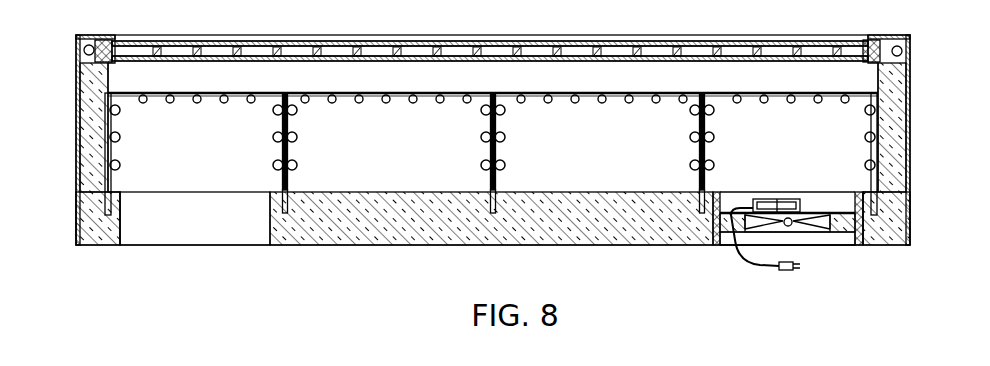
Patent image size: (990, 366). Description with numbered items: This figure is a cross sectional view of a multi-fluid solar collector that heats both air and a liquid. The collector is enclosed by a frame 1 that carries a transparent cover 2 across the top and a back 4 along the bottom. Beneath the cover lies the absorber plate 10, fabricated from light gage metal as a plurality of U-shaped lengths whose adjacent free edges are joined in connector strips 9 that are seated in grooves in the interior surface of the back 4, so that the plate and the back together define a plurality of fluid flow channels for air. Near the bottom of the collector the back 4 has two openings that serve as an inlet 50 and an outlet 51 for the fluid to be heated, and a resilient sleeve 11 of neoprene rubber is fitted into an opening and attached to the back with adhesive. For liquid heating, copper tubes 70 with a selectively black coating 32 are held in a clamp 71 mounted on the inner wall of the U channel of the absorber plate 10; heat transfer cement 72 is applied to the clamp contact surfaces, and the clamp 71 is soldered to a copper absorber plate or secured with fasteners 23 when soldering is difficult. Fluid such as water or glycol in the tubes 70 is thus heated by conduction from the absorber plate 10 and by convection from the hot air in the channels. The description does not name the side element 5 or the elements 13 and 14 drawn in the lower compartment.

The frame 1 is at (908, 72).
The cover 2 is at (693, 43).
The back 4 is at (418, 232).
The side wall 5 is at (895, 158).
The connector strip 9 is at (493, 186).
The absorber plate 10 is at (558, 94).
The resilient sleeve 11 is at (119, 244).
The fan unit 13 is at (807, 229).
The motor 14 is at (782, 198).
The fasteners 23 is at (276, 172).
The black coating 32 is at (512, 94).
The inlet opening 50 is at (187, 233).
The outlet opening 51 is at (787, 241).
The copper tubes 70 is at (276, 140).
The clamp 71 is at (117, 133).
The heat transfer cement 72 is at (275, 116).